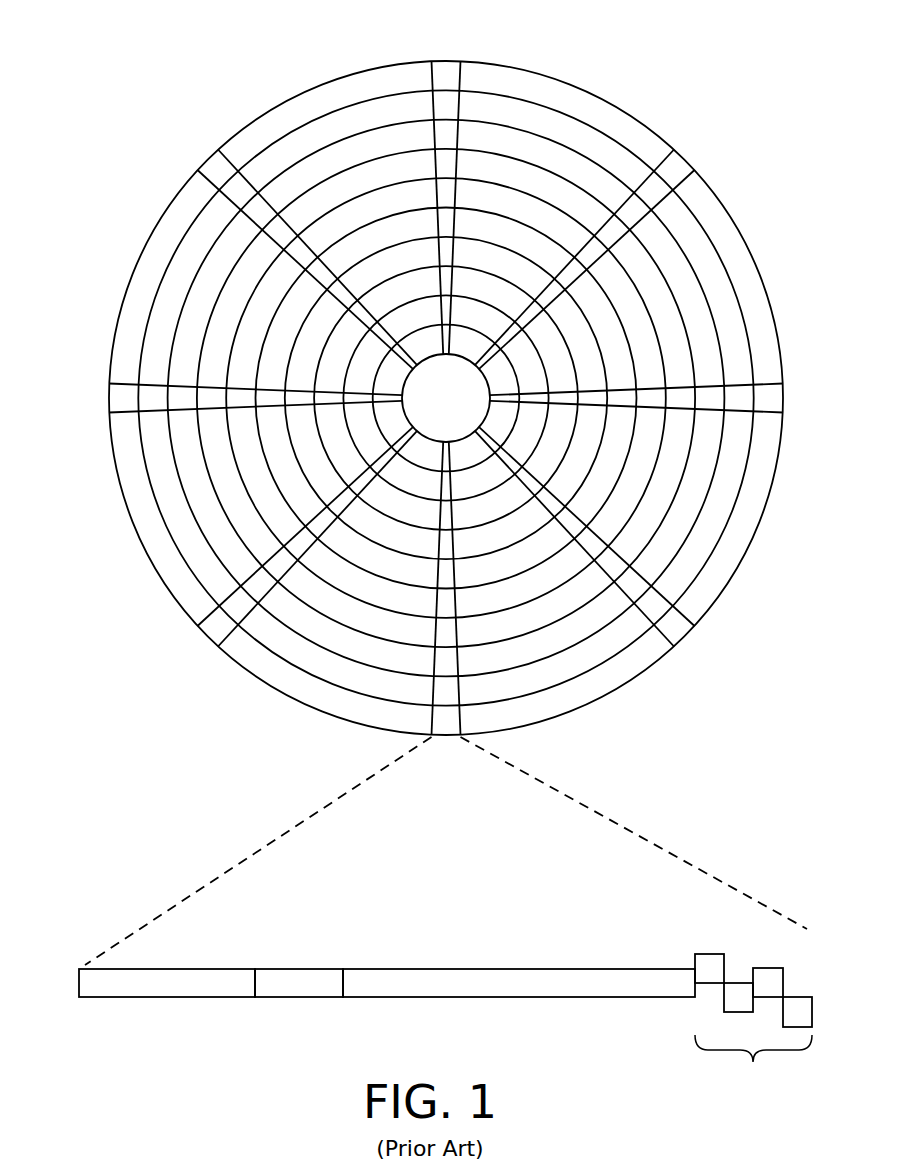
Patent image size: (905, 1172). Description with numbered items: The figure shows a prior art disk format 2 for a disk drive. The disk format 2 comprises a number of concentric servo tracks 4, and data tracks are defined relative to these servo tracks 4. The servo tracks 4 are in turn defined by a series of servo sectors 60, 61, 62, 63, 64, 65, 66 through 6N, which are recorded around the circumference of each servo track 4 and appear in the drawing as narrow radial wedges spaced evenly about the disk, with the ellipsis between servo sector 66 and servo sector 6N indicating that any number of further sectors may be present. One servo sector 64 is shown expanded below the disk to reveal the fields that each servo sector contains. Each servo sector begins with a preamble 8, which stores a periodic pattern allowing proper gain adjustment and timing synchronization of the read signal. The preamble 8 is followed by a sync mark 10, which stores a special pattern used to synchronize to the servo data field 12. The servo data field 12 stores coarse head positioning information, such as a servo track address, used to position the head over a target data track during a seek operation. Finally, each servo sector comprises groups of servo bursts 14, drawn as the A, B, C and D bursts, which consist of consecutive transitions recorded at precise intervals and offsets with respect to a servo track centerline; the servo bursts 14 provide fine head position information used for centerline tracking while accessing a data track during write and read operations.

The disk format 2 is at (448, 411).
The servo tracks 4 is at (560, 130).
The servo sector 60 is at (446, 74).
The servo sector 61 is at (674, 168).
The servo sector 62 is at (772, 399).
The servo sector 63 is at (677, 631).
The servo sector 64 is at (297, 815).
The servo sector 65 is at (213, 632).
The servo sector 66 is at (118, 398).
The servo sector 6N is at (278, 237).
The preamble 8 is at (147, 998).
The sync mark 10 is at (297, 998).
The servo data field 12 is at (508, 998).
The servo bursts 14 is at (683, 935).